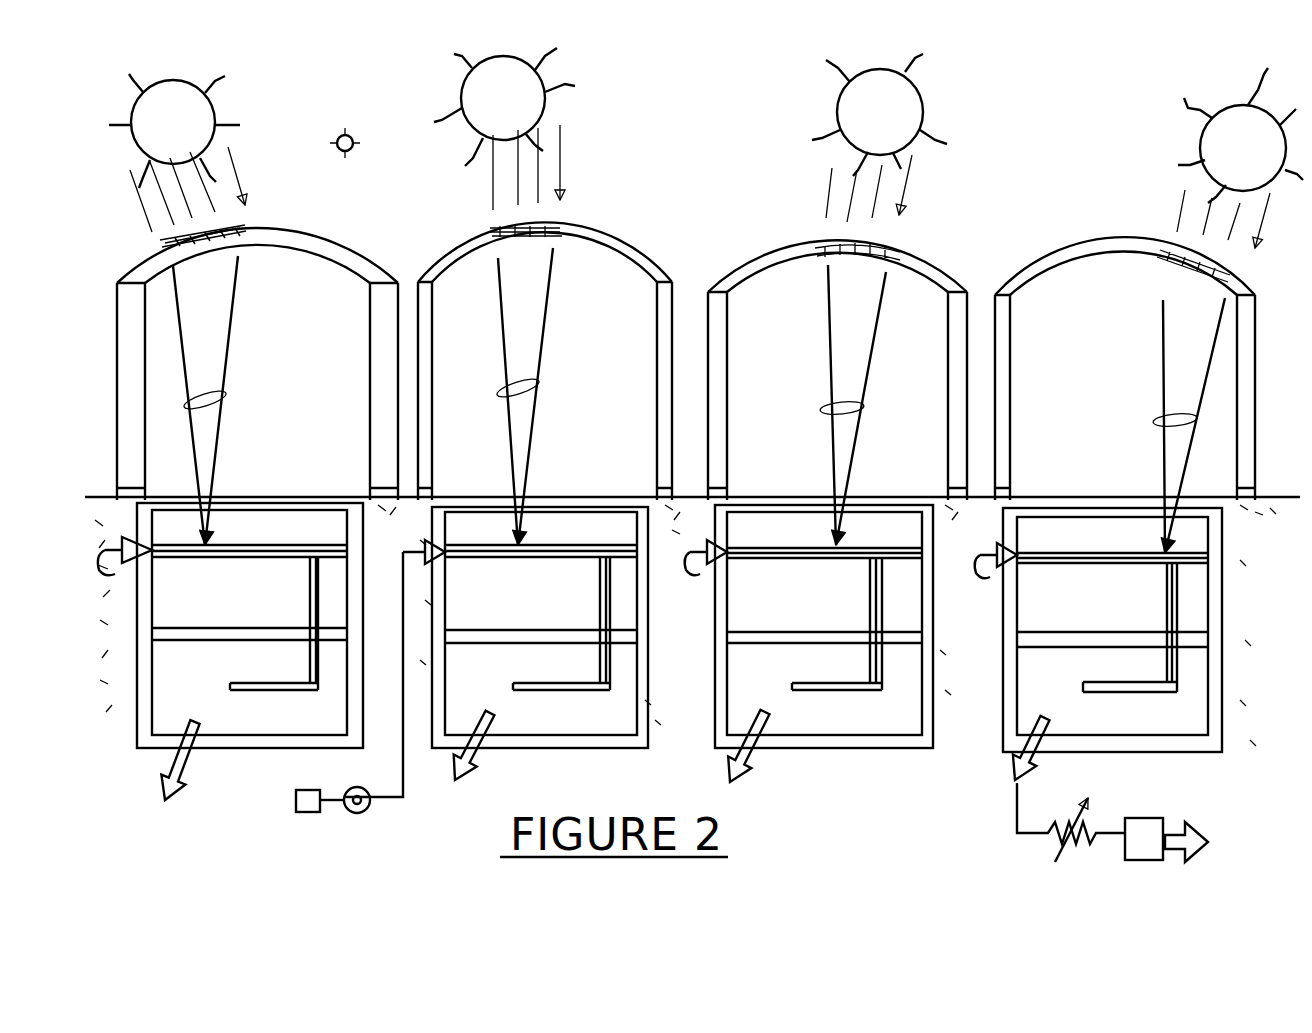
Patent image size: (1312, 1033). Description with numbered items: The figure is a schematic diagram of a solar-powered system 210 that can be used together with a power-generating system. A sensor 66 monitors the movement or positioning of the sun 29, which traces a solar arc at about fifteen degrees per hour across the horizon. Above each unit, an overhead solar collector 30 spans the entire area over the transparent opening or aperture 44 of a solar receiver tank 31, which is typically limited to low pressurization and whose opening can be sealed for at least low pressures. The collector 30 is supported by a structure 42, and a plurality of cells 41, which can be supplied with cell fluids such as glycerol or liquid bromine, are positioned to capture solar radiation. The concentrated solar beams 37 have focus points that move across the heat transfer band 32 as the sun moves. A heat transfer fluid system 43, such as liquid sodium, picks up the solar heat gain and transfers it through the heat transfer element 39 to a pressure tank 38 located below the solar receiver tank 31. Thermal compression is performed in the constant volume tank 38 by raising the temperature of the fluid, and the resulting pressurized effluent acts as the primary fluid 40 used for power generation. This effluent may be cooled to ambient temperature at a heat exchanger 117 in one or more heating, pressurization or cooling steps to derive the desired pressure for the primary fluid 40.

The solar-powered system 210 is at (1042, 70).
The sun 29 is at (180, 142).
The sensor 66 is at (356, 132).
The solar collector 30 is at (328, 242).
The cells 41 is at (244, 228).
The concentrated solar beams 37 is at (218, 403).
The structure 42 is at (183, 462).
The transparent opening or aperture 44 is at (275, 470).
The solar receiver tank 31 is at (137, 600).
The heat transfer band 32 is at (272, 525).
The heat transfer element 39 is at (247, 680).
The pressure tank 38 is at (282, 729).
The primary fluid 40 is at (1197, 813).
The heat transfer fluid system 43 is at (116, 528).
The heat exchanger 117 is at (1117, 778).